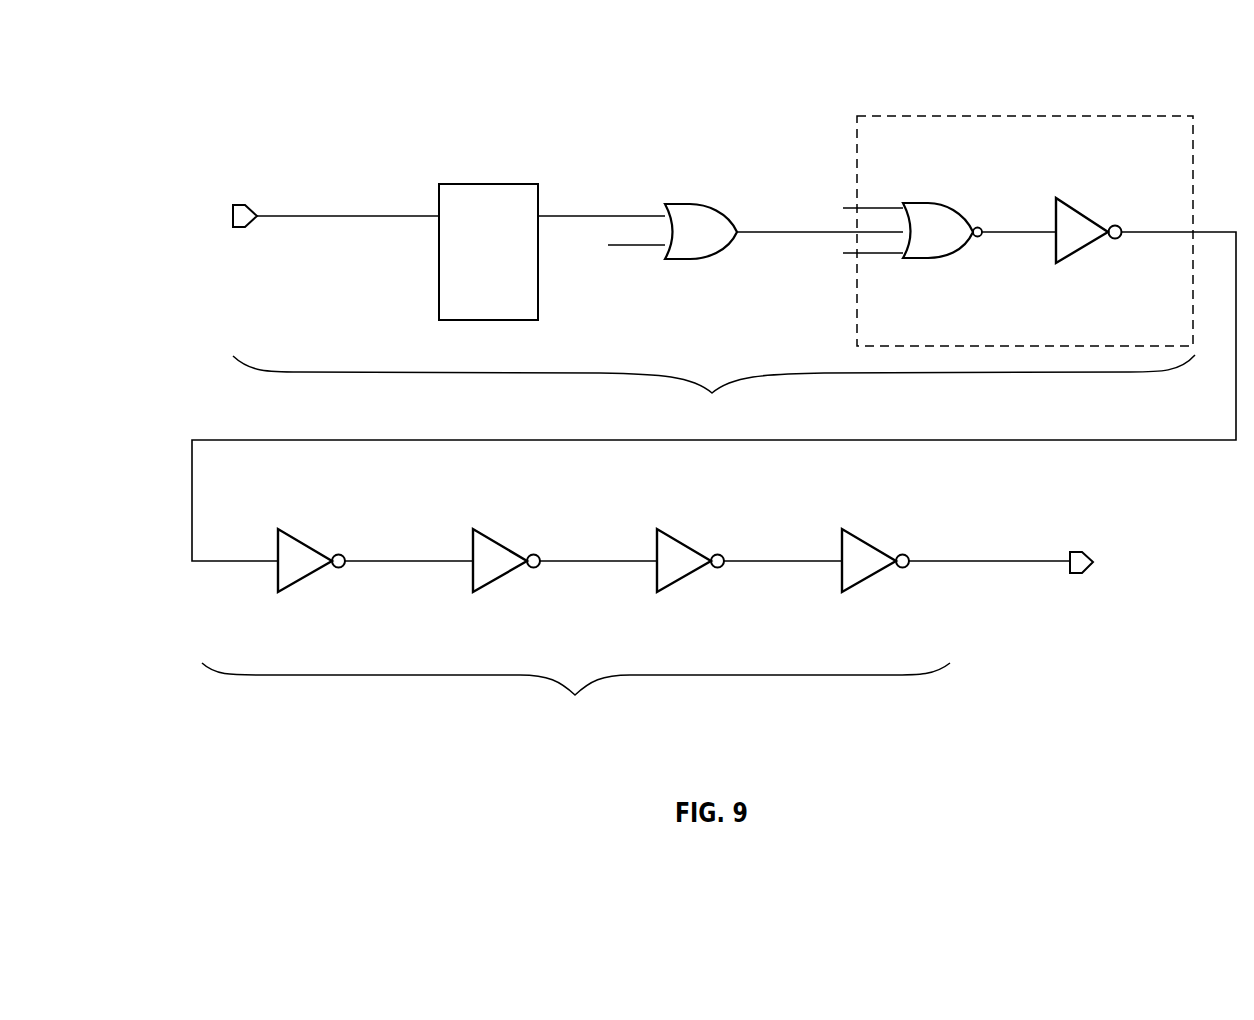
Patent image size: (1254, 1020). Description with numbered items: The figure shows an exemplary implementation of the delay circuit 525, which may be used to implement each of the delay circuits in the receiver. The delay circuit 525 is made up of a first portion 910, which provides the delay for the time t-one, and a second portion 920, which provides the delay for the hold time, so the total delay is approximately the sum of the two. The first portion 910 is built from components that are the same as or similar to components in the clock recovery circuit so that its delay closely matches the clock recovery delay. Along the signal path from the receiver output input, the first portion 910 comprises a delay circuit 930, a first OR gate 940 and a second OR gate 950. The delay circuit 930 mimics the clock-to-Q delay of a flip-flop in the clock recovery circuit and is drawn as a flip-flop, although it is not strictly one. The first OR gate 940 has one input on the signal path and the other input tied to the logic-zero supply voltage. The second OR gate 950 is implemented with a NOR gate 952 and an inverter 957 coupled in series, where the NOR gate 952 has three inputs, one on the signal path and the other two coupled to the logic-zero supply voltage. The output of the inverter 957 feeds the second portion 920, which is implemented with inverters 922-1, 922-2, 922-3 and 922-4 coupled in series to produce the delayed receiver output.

The delay circuit 525 is at (338, 119).
The first portion 910 is at (714, 390).
The second portion 920 is at (636, 632).
The inverter 922-1 is at (315, 573).
The inverter 922-2 is at (505, 573).
The inverter 922-3 is at (695, 573).
The inverter 922-4 is at (882, 573).
The delay circuit 930 is at (538, 280).
The first OR gate 940 is at (715, 255).
The second OR gate 950 is at (1137, 116).
The NOR gate 952 is at (927, 260).
The inverter 957 is at (1085, 250).